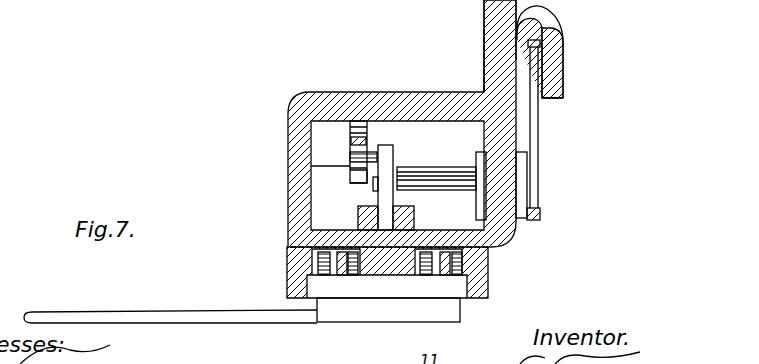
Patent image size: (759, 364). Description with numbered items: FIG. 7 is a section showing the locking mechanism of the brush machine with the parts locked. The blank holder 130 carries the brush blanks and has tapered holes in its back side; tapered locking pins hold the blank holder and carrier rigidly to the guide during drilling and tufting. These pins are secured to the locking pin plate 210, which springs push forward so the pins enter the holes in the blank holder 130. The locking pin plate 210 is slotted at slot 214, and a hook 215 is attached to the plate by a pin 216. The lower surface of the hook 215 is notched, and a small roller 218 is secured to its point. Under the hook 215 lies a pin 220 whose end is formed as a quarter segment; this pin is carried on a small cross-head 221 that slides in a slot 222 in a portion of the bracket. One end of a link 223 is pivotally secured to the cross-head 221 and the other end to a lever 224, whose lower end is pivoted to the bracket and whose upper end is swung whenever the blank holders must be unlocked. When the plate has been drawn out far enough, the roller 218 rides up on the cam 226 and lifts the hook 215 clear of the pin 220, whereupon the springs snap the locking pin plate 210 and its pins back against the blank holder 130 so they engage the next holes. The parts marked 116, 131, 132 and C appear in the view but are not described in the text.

The upright wall 116 is at (432, 46).
The housing 131 is at (305, 235).
The base 132 is at (490, 272).
The blank holder 130 is at (380, 290).
The lever C is at (245, 316).
The locking pin plate 210 is at (357, 210).
The slot 214 is at (410, 183).
The hook 215 is at (384, 150).
The pin 216 is at (357, 207).
The small roller 218 is at (349, 125).
The pin 220 is at (458, 190).
The cross-head 221 is at (522, 160).
The slot 222 is at (512, 65).
The link 223 is at (540, 173).
The lever 224 is at (563, 53).
The cam 226 is at (352, 150).